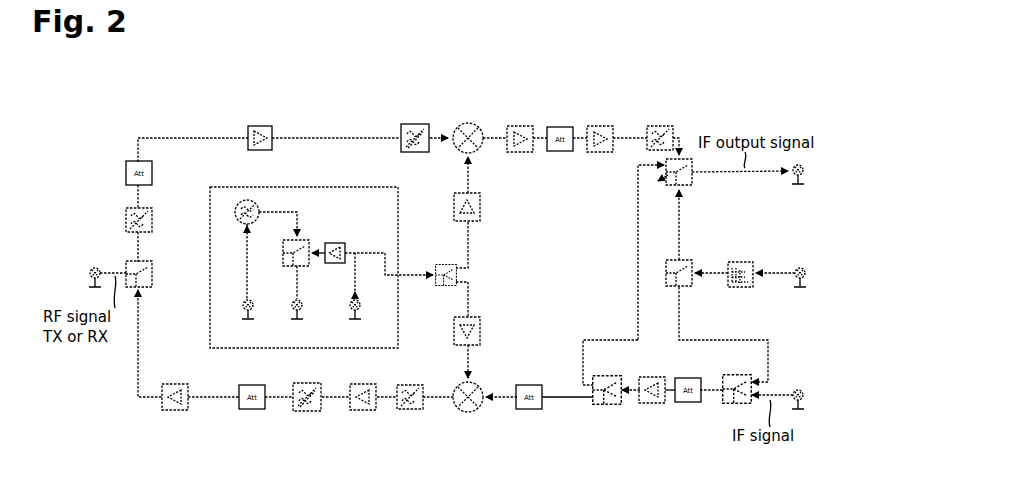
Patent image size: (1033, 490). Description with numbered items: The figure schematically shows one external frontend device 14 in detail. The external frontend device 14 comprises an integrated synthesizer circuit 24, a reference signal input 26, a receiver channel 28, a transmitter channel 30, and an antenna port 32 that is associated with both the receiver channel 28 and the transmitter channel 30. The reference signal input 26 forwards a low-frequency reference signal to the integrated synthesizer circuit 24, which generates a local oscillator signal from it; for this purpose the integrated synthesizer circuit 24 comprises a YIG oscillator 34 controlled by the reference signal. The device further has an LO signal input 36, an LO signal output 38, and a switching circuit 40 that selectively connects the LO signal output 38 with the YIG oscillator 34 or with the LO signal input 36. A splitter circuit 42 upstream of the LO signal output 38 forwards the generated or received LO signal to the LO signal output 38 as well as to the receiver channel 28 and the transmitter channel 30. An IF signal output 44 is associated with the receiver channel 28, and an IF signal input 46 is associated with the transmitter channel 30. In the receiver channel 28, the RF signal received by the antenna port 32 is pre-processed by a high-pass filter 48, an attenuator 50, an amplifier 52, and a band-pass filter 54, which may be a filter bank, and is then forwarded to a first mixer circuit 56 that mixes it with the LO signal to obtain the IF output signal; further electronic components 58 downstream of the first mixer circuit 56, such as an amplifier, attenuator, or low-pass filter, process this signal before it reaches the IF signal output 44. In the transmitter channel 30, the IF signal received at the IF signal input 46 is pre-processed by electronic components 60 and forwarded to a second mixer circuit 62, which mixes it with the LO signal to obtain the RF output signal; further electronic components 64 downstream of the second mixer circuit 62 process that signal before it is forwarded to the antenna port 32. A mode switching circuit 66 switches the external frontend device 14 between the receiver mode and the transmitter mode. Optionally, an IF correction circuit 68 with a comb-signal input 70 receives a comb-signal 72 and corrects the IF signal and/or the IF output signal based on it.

The external frontend device 14 is at (366, 100).
The integrated synthesizer circuit 24 is at (210, 188).
The reference signal input 26 is at (243, 303).
The receiver channel 28 is at (118, 142).
The transmitter channel 30 is at (128, 395).
The antenna port 32 is at (91, 270).
The YIG oscillator 34 is at (247, 200).
The LO signal input 36 is at (291, 313).
The LO signal output 38 is at (350, 313).
The switching circuit 40 is at (298, 236).
The splitter circuit 42 is at (348, 253).
The IF signal output 44 is at (806, 176).
The IF signal input 46 is at (806, 391).
The high-pass filter 48 is at (126, 220).
The attenuator 50 is at (126, 173).
The amplifier 52 is at (259, 126).
The band-pass filter 54 is at (417, 123).
The first mixer circuit 56 is at (470, 122).
The further electronic components 58 is at (571, 122).
The electronic components 60 is at (667, 405).
The second mixer circuit 62 is at (468, 412).
The further electronic components 64 is at (250, 412).
The mode switching circuit 66 is at (152, 281).
The IF correction circuit 68 is at (628, 262).
The comb-signal input 70 is at (808, 271).
The comb-signal 72 is at (740, 262).